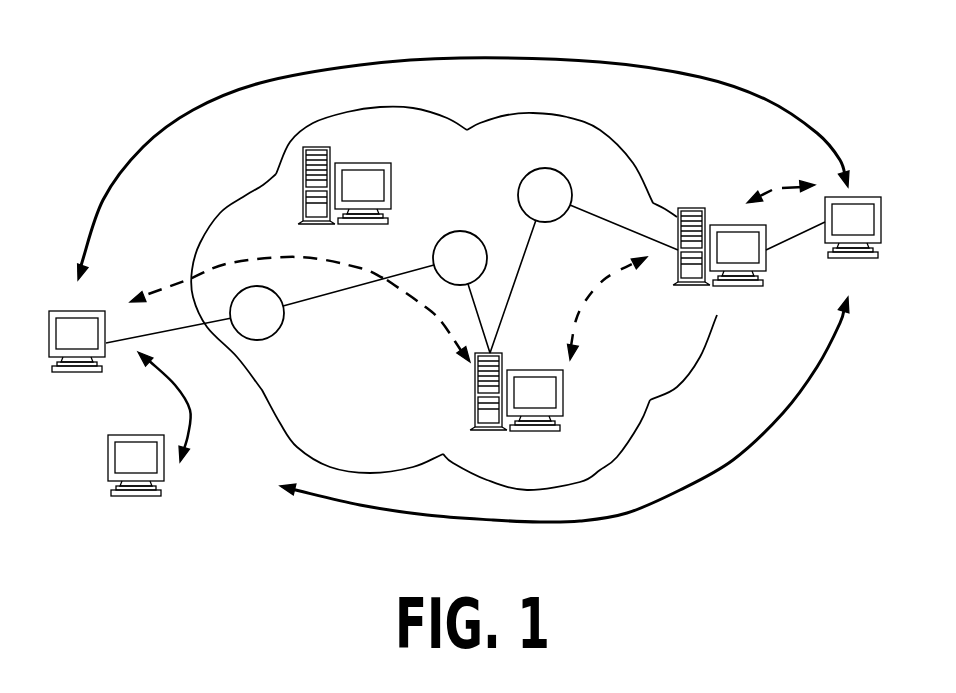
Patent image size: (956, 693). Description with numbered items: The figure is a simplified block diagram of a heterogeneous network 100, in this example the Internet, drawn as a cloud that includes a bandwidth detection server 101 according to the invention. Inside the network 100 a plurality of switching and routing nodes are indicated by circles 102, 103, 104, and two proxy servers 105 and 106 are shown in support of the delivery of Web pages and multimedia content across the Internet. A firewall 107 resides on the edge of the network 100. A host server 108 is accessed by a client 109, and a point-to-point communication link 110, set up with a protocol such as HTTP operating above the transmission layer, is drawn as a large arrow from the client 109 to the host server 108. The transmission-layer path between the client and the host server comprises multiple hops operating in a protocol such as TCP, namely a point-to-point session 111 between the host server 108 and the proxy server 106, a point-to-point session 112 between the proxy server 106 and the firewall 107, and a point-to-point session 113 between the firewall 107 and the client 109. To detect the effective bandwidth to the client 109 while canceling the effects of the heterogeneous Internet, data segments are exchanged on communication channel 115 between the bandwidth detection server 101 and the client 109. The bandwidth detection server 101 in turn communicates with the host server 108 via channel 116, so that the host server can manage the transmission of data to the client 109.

The heterogeneous network 100 is at (350, 435).
The bandwidth detection server 101 is at (108, 470).
The switching and routing node 102 is at (272, 325).
The switching and routing node 103 is at (475, 270).
The switching and routing node 104 is at (560, 207).
The proxy server 105 is at (360, 163).
The proxy server 106 is at (583, 393).
The firewall 107 is at (766, 272).
The host server 108 is at (62, 311).
The client 109 is at (874, 197).
The point-to-point communication link 110 is at (474, 57).
The point-to-point session 111 is at (421, 299).
The point-to-point session 112 is at (605, 283).
The point-to-point session 113 is at (790, 187).
The communication channel 115 is at (571, 522).
The channel 116 is at (188, 414).